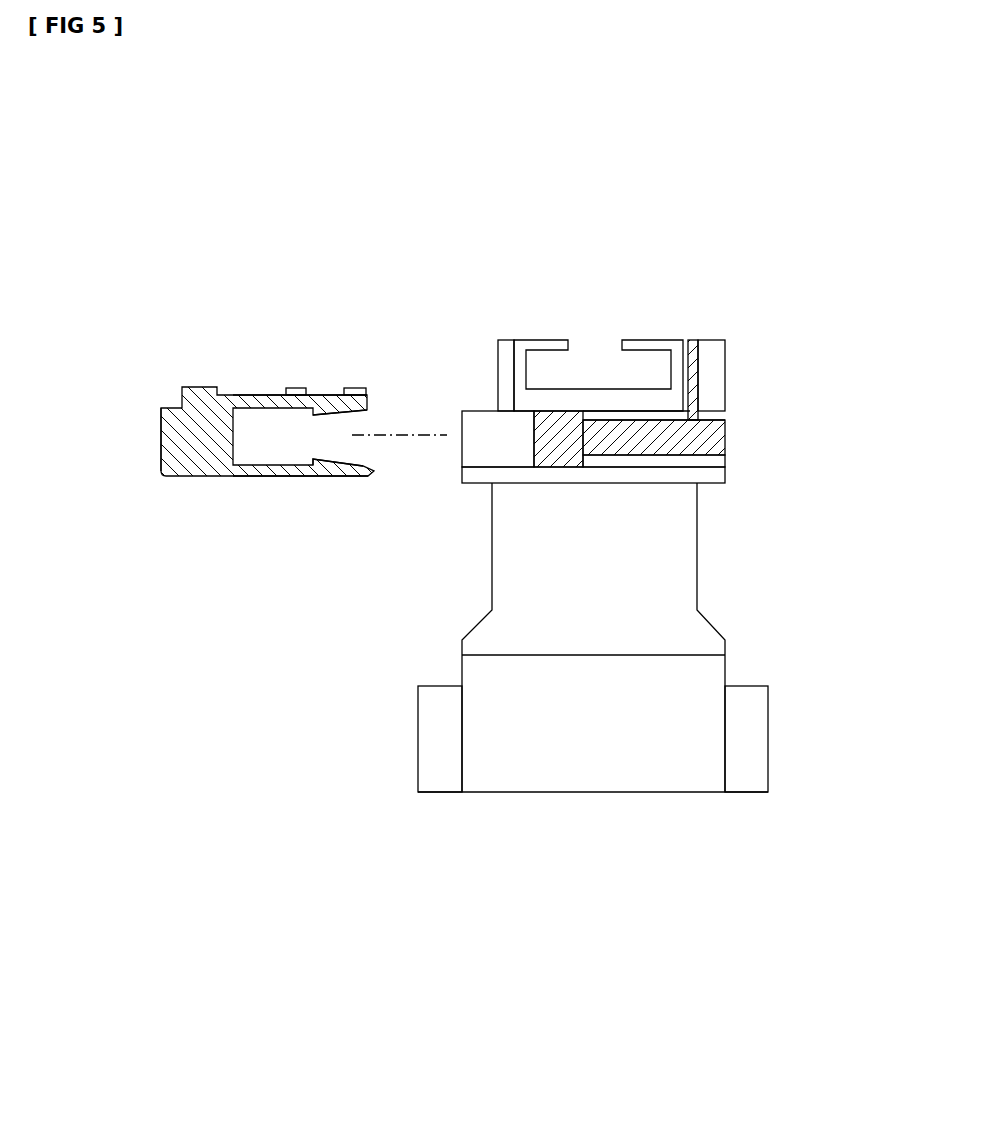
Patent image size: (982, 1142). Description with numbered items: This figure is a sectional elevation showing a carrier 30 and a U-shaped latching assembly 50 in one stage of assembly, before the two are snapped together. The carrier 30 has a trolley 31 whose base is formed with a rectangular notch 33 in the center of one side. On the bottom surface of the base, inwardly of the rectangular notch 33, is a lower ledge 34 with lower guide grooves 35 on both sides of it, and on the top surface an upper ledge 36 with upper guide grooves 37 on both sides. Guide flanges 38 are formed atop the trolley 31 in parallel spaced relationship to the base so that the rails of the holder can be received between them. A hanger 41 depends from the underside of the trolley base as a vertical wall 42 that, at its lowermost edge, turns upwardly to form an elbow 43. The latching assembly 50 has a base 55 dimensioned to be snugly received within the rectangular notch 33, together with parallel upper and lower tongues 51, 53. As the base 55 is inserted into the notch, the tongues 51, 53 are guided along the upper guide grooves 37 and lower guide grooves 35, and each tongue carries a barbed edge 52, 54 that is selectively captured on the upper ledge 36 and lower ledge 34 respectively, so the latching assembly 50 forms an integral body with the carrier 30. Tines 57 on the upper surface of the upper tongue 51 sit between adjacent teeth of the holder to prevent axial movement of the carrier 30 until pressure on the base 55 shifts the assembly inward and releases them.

The carrier 30 is at (550, 614).
The trolley 31 is at (647, 413).
The rectangular notch 33 is at (458, 411).
The lower ledge 34 is at (585, 462).
The lower guide grooves 35 is at (570, 478).
The upper ledge 36 is at (587, 415).
The upper guide grooves 37 is at (606, 339).
The guide flanges 38 is at (550, 348).
The hanger 41 is at (501, 648).
The vertical wall 42 is at (508, 573).
The elbow 43 is at (508, 788).
The U-shaped latching assembly 50 is at (231, 454).
The upper tongue 51 is at (258, 395).
The barbed edge 52 is at (338, 416).
The lower tongue 53 is at (254, 477).
The barbed edge 54 is at (323, 463).
The base 55 is at (160, 438).
The tines 57 is at (352, 388).